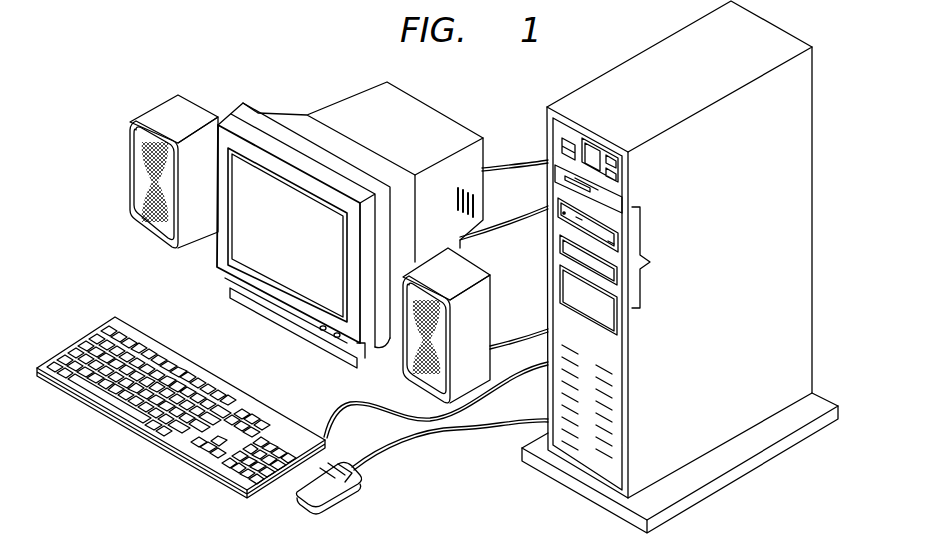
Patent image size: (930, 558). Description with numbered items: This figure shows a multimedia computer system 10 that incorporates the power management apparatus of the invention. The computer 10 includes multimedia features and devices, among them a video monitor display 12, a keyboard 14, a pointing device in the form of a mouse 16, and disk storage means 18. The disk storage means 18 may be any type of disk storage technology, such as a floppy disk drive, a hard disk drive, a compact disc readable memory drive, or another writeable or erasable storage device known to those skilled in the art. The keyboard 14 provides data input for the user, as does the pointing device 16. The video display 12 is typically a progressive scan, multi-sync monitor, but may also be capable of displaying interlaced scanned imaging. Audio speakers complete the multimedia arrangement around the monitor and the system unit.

The computer system 10 is at (742, 482).
The video monitor display 12 is at (340, 100).
The keyboard 14 is at (75, 343).
The mouse 16 is at (345, 505).
The disk storage means 18 is at (659, 257).